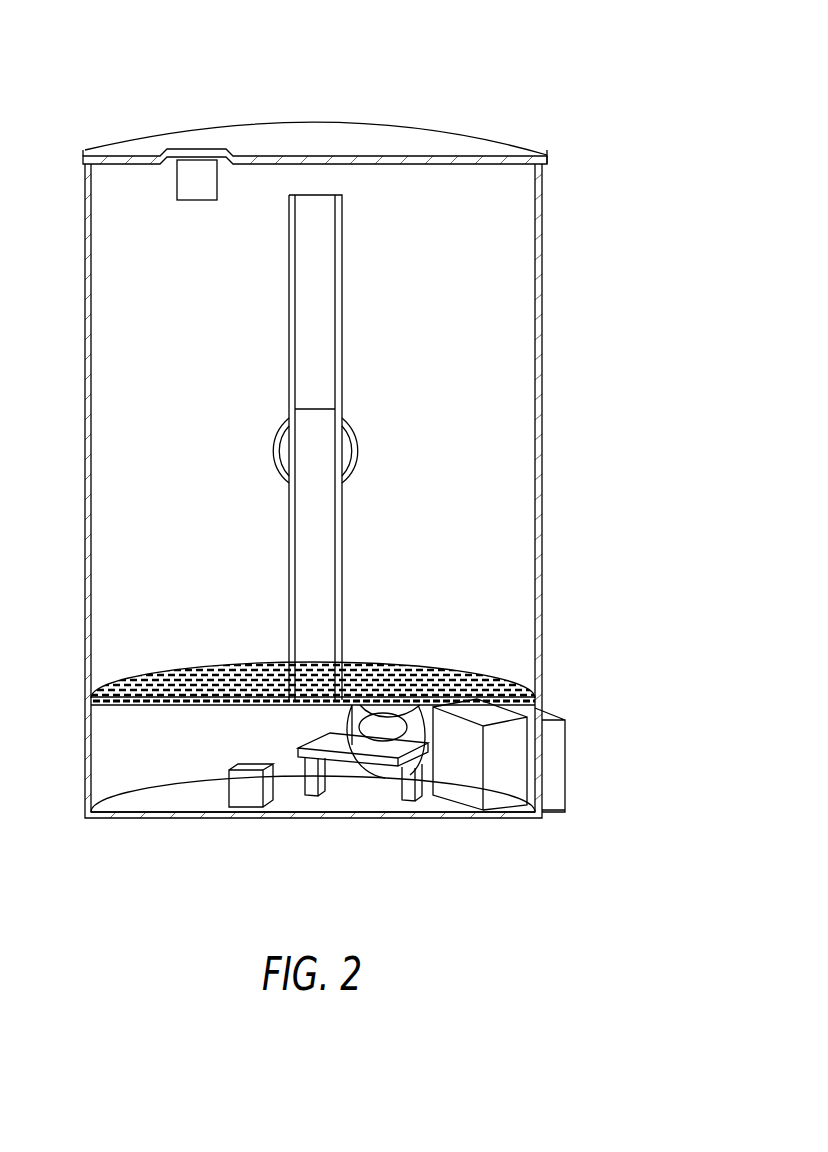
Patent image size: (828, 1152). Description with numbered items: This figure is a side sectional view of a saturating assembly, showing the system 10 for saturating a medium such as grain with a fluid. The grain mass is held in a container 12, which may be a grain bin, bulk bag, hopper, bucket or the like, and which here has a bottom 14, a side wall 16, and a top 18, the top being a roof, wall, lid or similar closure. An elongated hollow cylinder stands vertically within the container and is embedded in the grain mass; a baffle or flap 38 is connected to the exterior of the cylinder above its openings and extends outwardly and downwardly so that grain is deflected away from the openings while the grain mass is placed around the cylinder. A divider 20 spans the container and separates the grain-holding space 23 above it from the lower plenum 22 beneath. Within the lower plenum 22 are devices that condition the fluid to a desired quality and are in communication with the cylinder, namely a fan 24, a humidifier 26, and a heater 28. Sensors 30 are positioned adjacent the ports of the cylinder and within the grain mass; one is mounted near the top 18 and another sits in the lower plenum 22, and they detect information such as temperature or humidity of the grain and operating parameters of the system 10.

The system 10 is at (598, 127).
The container 12 is at (553, 258).
The bottom 14 is at (355, 818).
The side wall 16 is at (542, 366).
The top 18 is at (447, 140).
The divider 20 is at (490, 680).
The lower plenum 22 is at (170, 754).
The upper chamber 23 is at (190, 472).
The fan 24 is at (520, 728).
The humidifier 26 is at (503, 790).
The heater 28 is at (418, 787).
The sensors 30 is at (202, 173).
The baffle or flap 38 is at (357, 450).